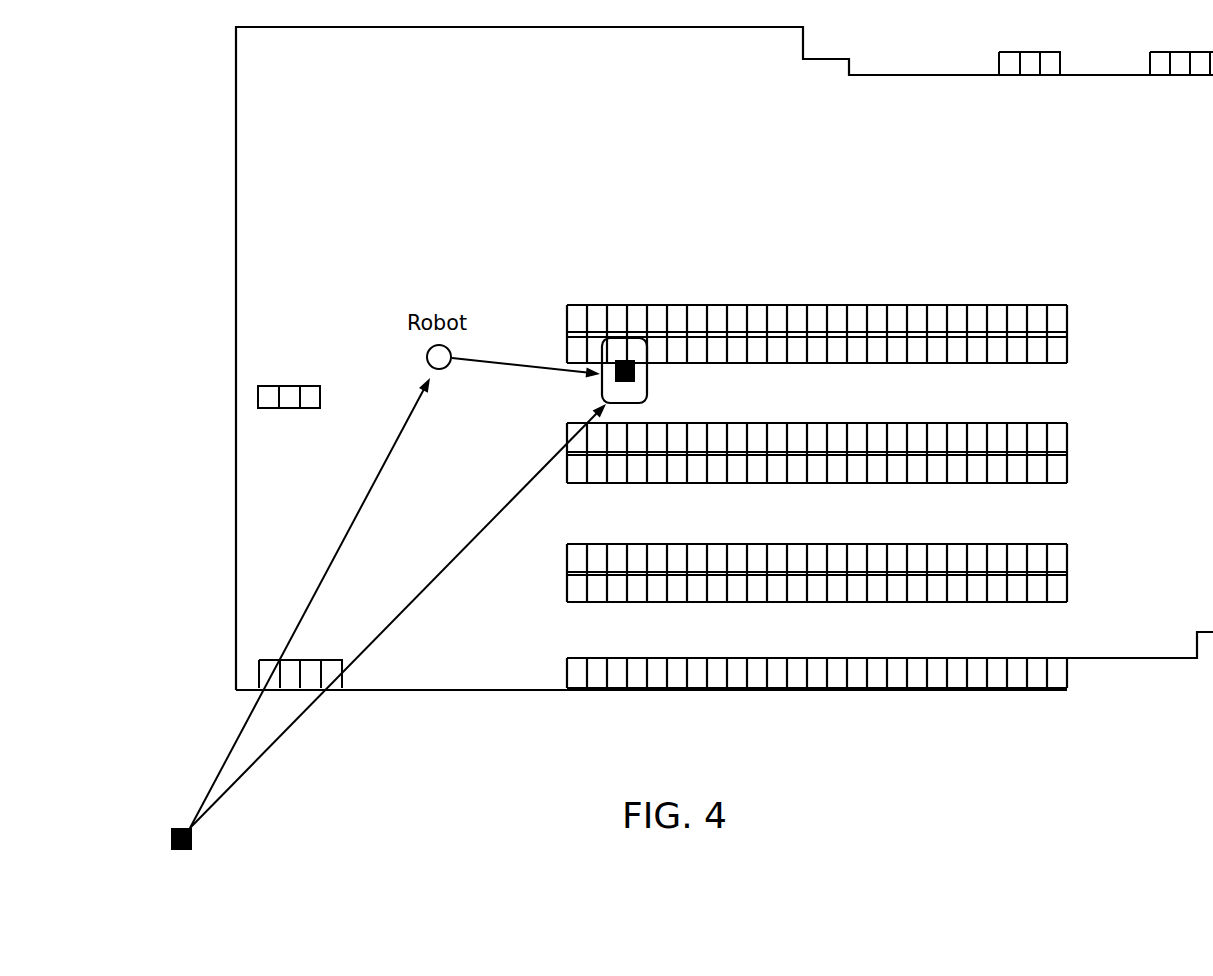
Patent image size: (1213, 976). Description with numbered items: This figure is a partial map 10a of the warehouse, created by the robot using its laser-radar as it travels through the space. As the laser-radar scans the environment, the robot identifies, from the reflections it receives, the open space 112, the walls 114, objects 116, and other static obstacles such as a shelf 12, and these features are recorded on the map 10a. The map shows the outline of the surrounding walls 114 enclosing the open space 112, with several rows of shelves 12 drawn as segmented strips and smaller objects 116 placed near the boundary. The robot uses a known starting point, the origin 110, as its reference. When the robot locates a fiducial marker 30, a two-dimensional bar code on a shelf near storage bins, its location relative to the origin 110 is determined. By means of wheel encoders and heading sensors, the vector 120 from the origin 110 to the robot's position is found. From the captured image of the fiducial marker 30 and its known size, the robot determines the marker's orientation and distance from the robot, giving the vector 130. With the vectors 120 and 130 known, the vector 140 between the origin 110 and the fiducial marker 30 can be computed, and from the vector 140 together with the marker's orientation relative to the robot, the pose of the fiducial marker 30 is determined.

The map 10a is at (708, 185).
The shelf 12 is at (856, 318).
The fiducial marker 30 is at (602, 392).
The origin 110 is at (171, 841).
The open space 112 is at (817, 478).
The walls 114 is at (500, 692).
The objects 116 is at (290, 386).
The vector 120 is at (348, 530).
The vector 130 is at (523, 363).
The vector 140 is at (437, 578).